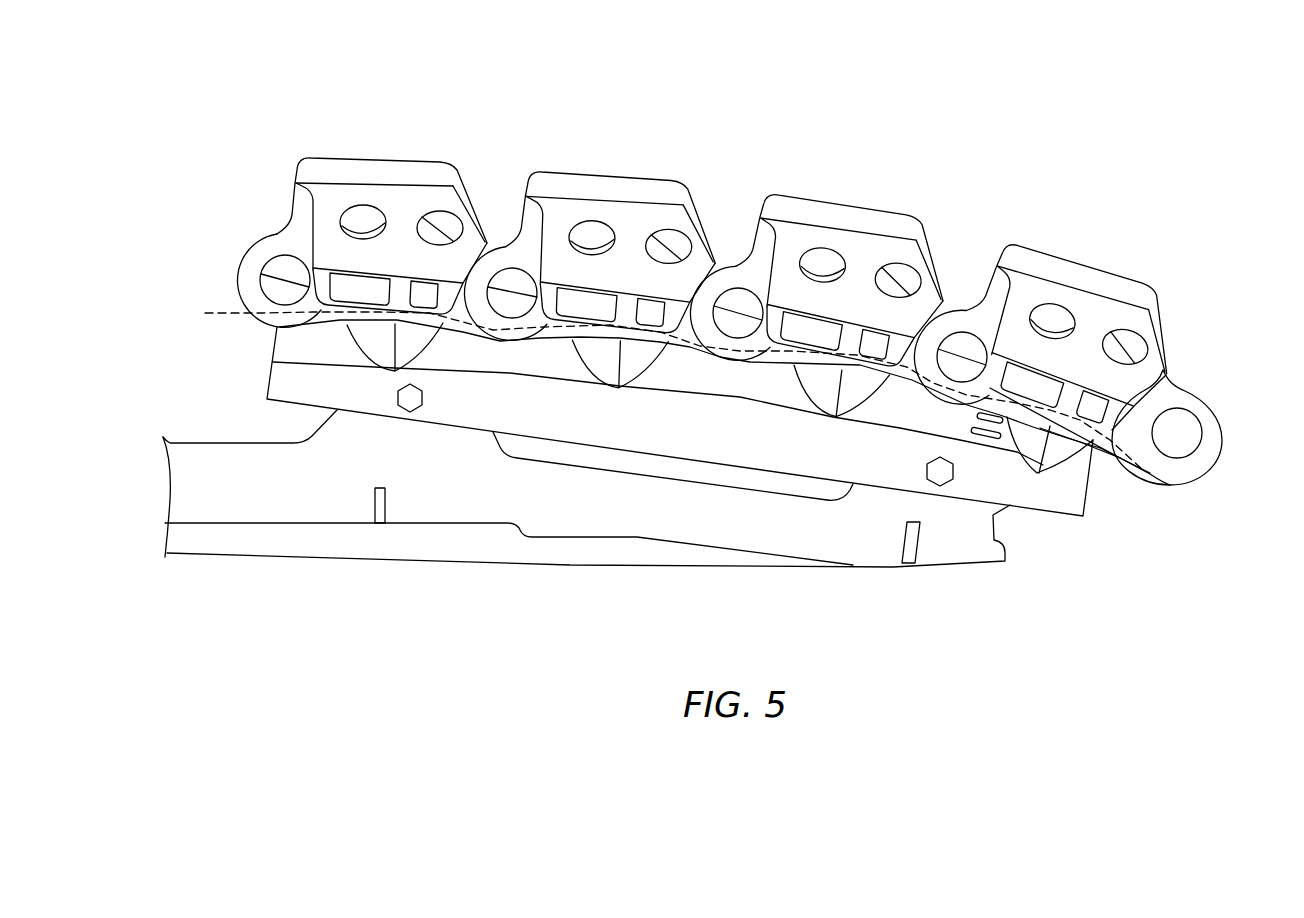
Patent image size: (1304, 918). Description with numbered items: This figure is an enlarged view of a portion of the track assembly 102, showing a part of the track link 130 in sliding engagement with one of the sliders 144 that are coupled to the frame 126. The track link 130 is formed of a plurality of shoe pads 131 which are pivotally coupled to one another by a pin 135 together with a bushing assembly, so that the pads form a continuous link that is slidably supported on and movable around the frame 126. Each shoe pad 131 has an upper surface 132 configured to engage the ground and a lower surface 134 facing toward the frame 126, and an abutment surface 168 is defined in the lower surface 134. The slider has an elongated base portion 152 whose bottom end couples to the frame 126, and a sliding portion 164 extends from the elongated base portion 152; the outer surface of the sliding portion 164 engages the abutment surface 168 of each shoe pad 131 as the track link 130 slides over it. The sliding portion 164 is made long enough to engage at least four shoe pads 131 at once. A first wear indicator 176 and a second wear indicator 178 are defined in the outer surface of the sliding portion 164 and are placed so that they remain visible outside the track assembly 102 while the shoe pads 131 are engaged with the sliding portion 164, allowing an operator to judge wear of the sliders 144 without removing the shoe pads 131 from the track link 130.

The track assembly 102 is at (1150, 94).
The track link 130 is at (802, 207).
The upper surface 132 is at (1105, 285).
The pin 135 is at (963, 334).
The abutment surface 168 is at (654, 383).
The sliding portion 164 is at (287, 340).
The shoe pad 131 is at (383, 347).
The first wear indicator 176 is at (1003, 418).
The second wear indicator 178 is at (1000, 436).
The lower surface 134 is at (1055, 446).
The elongated base portion 152 is at (1073, 503).
The sliders 144 is at (1088, 545).
The frame 126 is at (957, 547).